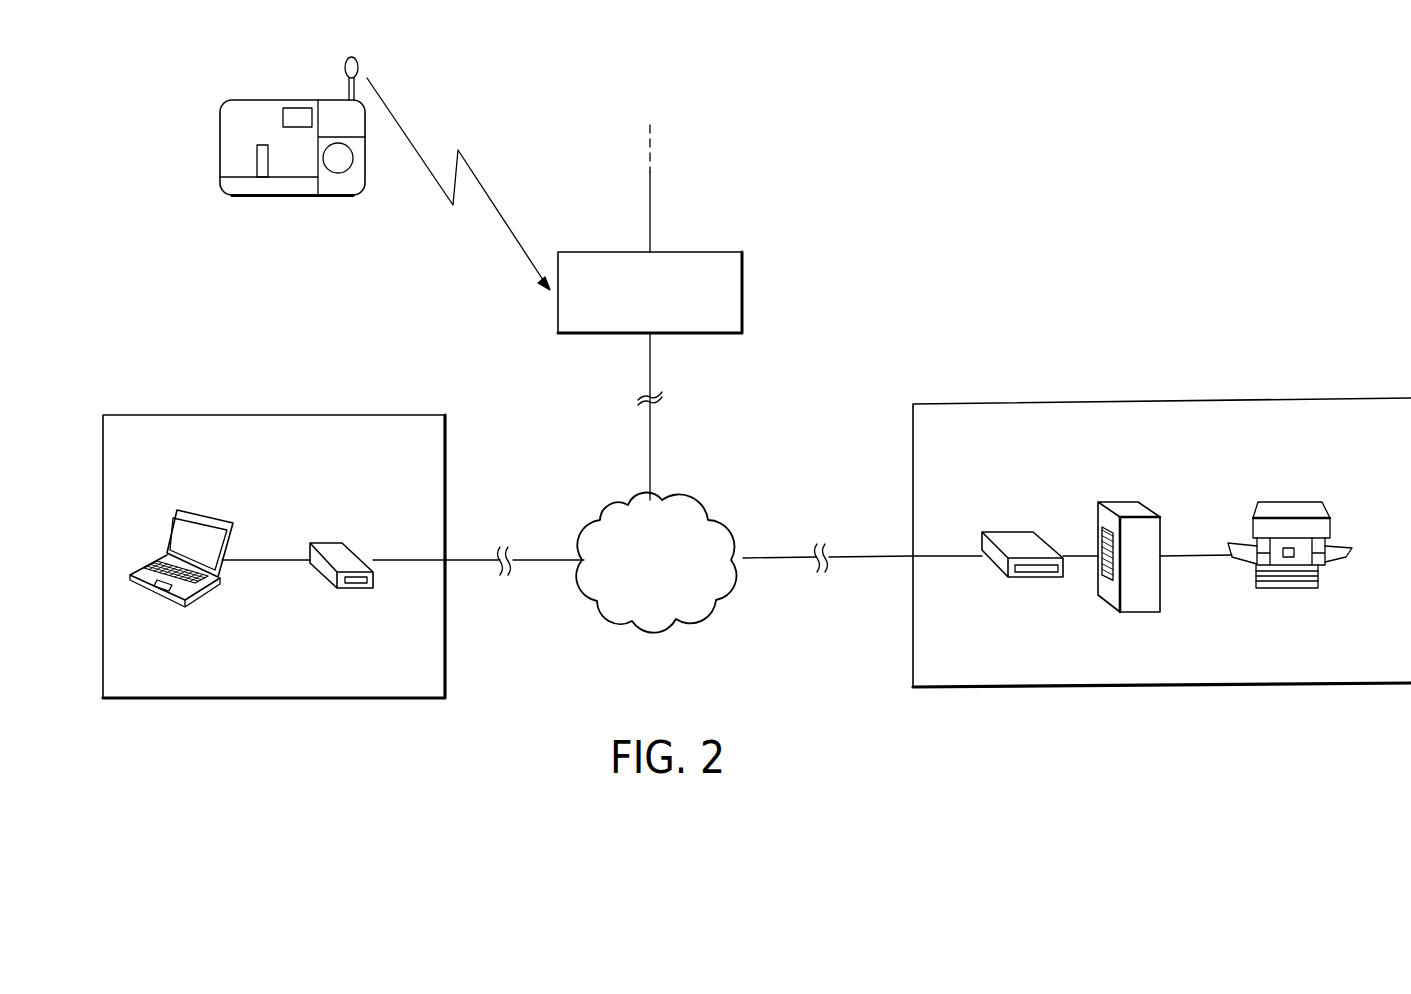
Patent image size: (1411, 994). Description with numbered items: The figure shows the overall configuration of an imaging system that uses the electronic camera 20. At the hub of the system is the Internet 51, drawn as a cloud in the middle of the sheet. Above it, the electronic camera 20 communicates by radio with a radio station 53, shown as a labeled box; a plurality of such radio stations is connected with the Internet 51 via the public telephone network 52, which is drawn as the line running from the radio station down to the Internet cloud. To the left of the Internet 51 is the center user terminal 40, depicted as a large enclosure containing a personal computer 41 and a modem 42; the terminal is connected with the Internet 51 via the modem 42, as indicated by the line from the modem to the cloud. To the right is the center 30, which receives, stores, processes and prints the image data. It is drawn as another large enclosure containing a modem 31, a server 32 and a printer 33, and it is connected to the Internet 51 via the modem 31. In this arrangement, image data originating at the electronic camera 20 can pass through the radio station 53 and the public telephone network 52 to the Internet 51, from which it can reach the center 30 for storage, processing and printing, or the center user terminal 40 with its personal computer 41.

The electronic camera 20 is at (240, 197).
The radio station 53 is at (720, 250).
The public telephone network 52 is at (651, 423).
The Internet 51 is at (705, 497).
The center user terminal 40 is at (130, 414).
The personal computer 41 is at (210, 512).
The modem 42 is at (340, 542).
The center 30 is at (1007, 403).
The modem 31 is at (997, 531).
The server 32 is at (1118, 502).
The printer 33 is at (1293, 502).